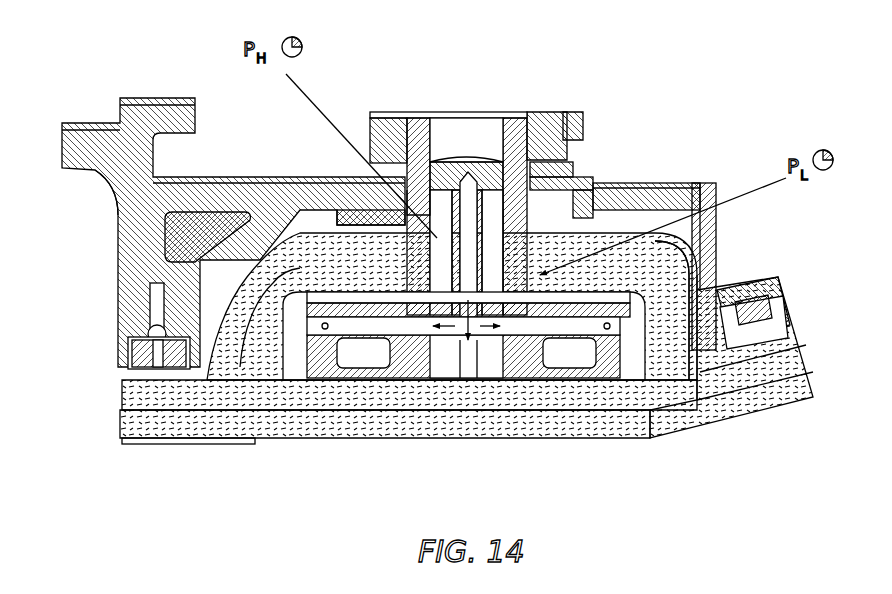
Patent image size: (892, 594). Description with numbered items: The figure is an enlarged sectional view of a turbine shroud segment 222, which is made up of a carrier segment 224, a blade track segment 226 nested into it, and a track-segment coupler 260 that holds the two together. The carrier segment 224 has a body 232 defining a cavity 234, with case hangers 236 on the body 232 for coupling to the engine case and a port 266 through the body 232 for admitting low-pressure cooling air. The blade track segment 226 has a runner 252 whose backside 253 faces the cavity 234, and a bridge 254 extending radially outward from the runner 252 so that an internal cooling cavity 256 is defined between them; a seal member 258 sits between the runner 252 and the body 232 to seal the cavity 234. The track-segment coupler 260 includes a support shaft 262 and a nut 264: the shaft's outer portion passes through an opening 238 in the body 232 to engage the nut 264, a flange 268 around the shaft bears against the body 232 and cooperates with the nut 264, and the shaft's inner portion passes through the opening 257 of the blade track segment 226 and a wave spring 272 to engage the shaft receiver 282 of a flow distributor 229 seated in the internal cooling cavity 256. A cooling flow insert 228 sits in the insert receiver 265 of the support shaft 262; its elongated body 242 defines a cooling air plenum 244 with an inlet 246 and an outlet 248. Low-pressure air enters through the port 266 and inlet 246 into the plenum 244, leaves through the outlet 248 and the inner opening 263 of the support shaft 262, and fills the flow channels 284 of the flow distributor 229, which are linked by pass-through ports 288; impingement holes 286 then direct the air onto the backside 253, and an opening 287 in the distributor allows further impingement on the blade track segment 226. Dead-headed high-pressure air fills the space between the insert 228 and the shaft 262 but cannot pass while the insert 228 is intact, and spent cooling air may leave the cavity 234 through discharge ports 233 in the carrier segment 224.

The turbine shroud segment 222 is at (725, 68).
The carrier segment 224 is at (634, 161).
The blade track segment 226 is at (818, 352).
The cooling flow insert 228 is at (465, 135).
The flow distributor 229 is at (720, 265).
The body 232 is at (101, 298).
The cooling air discharge ports 233 is at (692, 213).
The cavity 234 is at (220, 292).
The case hangers 236 is at (149, 96).
The opening 238 is at (345, 227).
The elongated body 242 is at (510, 197).
The cooling air plenum 244 is at (445, 288).
The inlet 246 is at (593, 178).
The outlet 248 is at (444, 340).
The runner 252 is at (140, 425).
The backside 253 is at (291, 388).
The bridge 254 is at (224, 305).
The internal cooling cavity 256 is at (262, 420).
The opening 257 is at (738, 233).
The seal member 258 is at (140, 362).
The track-segment coupler 260 is at (408, 100).
The support shaft 262 is at (506, 100).
The inner opening 263 is at (514, 330).
The nut 264 is at (368, 128).
The insert receiver 265 is at (447, 131).
The port 266 is at (622, 182).
The flange 268 is at (398, 200).
The wave spring 272 is at (310, 380).
The shaft receiver 282 is at (534, 362).
The flow channels 284 is at (563, 327).
The impingement holes 286 is at (606, 372).
The opening 287 is at (470, 345).
The pass-through ports 288 is at (640, 308).